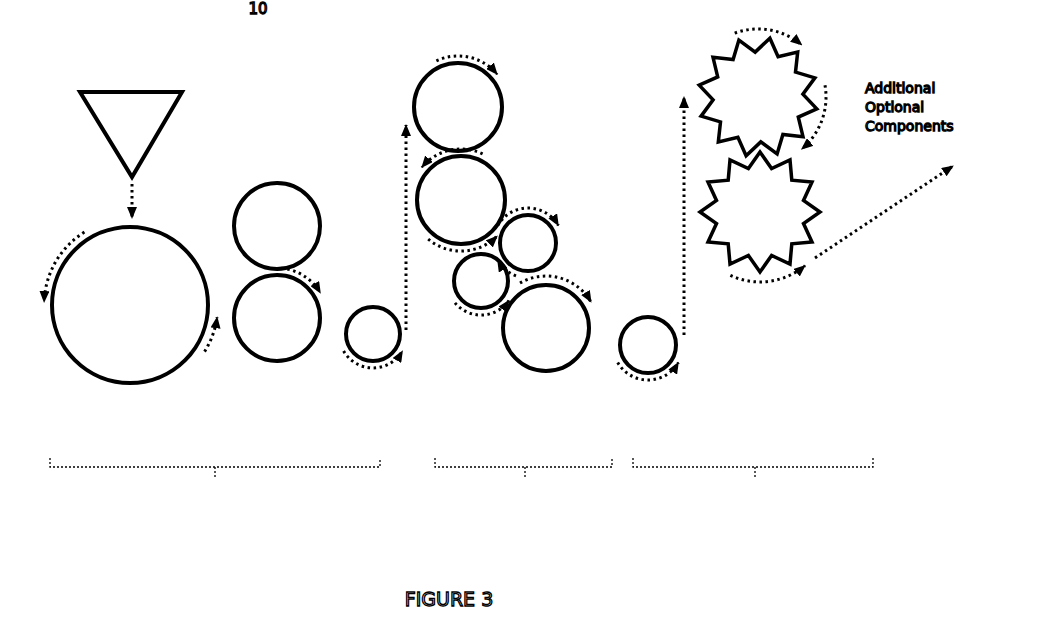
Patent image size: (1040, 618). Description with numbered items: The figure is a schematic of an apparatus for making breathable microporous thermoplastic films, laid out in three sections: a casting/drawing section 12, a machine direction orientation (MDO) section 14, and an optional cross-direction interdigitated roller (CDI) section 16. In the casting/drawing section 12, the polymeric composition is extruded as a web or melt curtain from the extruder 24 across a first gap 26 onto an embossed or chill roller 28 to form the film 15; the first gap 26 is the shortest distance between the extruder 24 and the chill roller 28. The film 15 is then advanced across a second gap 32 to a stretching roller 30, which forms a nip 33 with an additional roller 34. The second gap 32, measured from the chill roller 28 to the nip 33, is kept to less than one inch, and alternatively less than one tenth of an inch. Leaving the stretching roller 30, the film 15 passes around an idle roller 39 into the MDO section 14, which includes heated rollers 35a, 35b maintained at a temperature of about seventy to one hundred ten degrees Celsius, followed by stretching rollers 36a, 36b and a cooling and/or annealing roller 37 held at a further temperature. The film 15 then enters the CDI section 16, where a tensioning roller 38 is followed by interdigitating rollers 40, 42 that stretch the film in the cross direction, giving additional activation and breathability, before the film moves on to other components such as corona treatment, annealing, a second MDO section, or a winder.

The casting/drawing section 12 is at (215, 479).
The machine direction orientation (MDO) section 14 is at (523, 479).
The film 15 is at (62, 232).
The cross-direction interdigitated roller (CDI) section 16 is at (753, 479).
The extruder 24 is at (150, 97).
The first gap 26 is at (135, 197).
The chill roller 28 is at (150, 232).
The stretching roller 30 is at (268, 348).
The second gap 32 is at (208, 343).
The nip 33 is at (292, 270).
The additional roller 34 is at (268, 188).
The heated roller 35a is at (435, 85).
The heated roller 35b is at (492, 172).
The stretching roller 36a is at (557, 246).
The stretching roller 36b is at (463, 272).
The cooling and/or annealing roller 37 is at (513, 345).
The tensioning roller 38 is at (645, 325).
The idle roller 39 is at (372, 318).
The interdigitating roller 40 is at (818, 82).
The interdigitating roller 42 is at (805, 183).